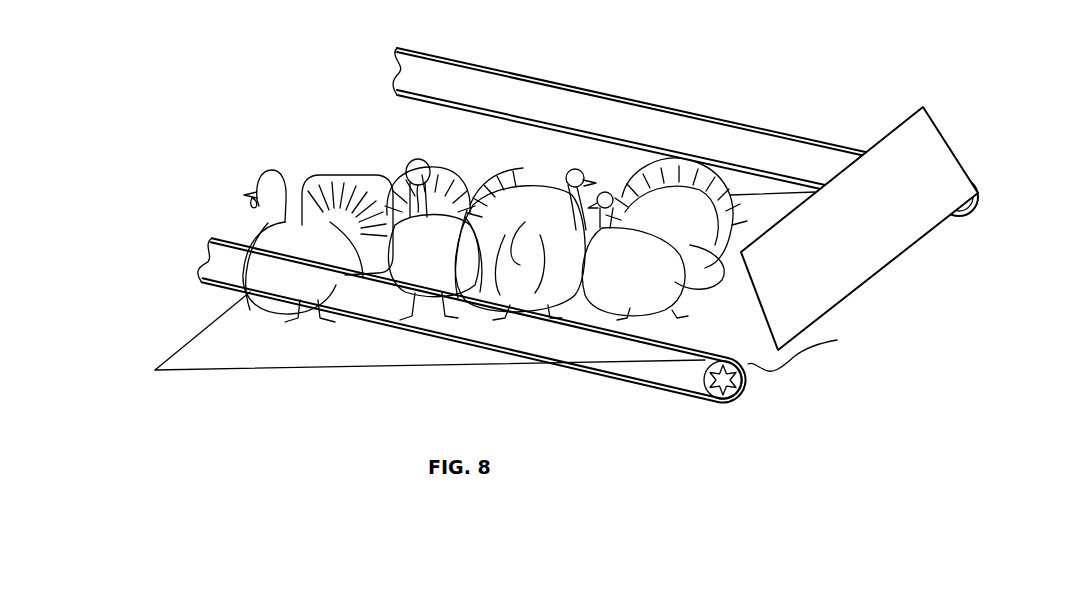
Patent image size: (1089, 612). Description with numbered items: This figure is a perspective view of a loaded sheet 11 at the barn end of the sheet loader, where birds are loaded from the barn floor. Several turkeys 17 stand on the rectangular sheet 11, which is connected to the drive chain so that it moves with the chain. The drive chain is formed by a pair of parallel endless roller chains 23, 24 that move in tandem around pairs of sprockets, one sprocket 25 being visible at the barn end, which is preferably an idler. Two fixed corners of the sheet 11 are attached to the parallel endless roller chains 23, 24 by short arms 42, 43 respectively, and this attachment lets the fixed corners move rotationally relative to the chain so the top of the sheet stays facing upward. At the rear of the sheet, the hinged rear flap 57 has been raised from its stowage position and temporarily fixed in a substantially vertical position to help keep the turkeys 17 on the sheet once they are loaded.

The sheet 11 is at (258, 358).
The turkeys 17 is at (333, 170).
The endless roller chain 23 is at (783, 133).
The endless roller chain 24 is at (615, 383).
The sprocket 25 is at (747, 387).
The short arm 42 is at (975, 188).
The short arm 43 is at (813, 344).
The rear flap 57 is at (930, 152).